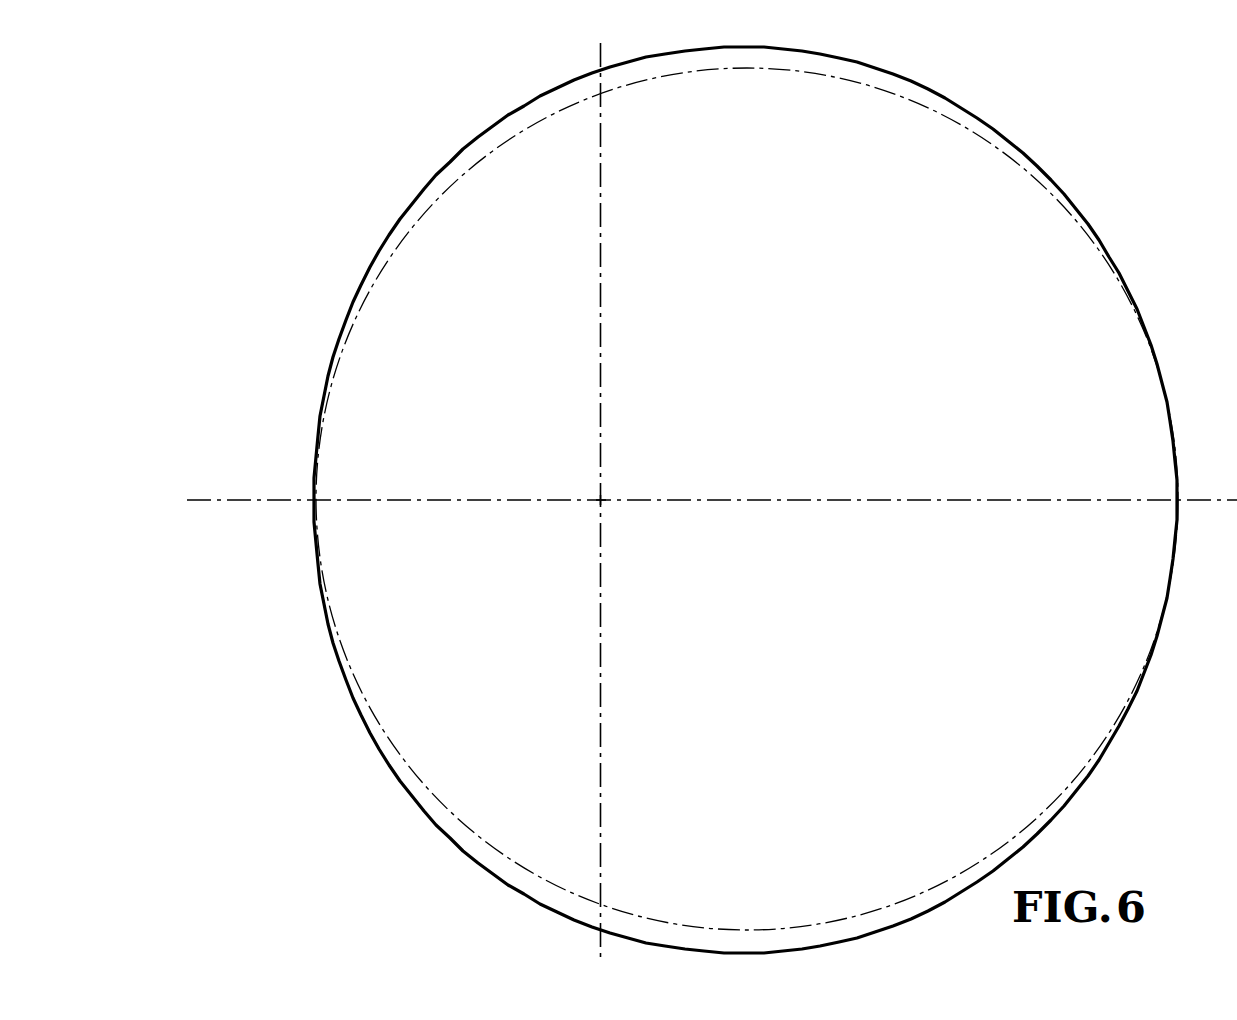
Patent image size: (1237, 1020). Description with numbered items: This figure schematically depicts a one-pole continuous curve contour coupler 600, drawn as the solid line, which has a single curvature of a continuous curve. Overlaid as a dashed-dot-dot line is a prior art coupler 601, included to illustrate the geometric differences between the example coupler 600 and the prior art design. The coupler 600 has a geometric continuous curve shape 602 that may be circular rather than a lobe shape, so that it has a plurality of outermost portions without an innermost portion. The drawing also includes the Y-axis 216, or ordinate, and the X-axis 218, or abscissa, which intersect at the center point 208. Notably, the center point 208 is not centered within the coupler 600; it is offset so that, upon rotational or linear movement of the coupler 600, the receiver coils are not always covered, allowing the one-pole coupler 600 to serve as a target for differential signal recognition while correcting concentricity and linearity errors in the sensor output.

The one-pole continuous curve contour coupler 600 is at (273, 136).
The prior art coupler 601 is at (412, 778).
The geometric continuous curve shape 602 is at (545, 99).
The Y-axis 216 is at (600, 257).
The X-axis 218 is at (233, 498).
The center point 208 is at (603, 499).